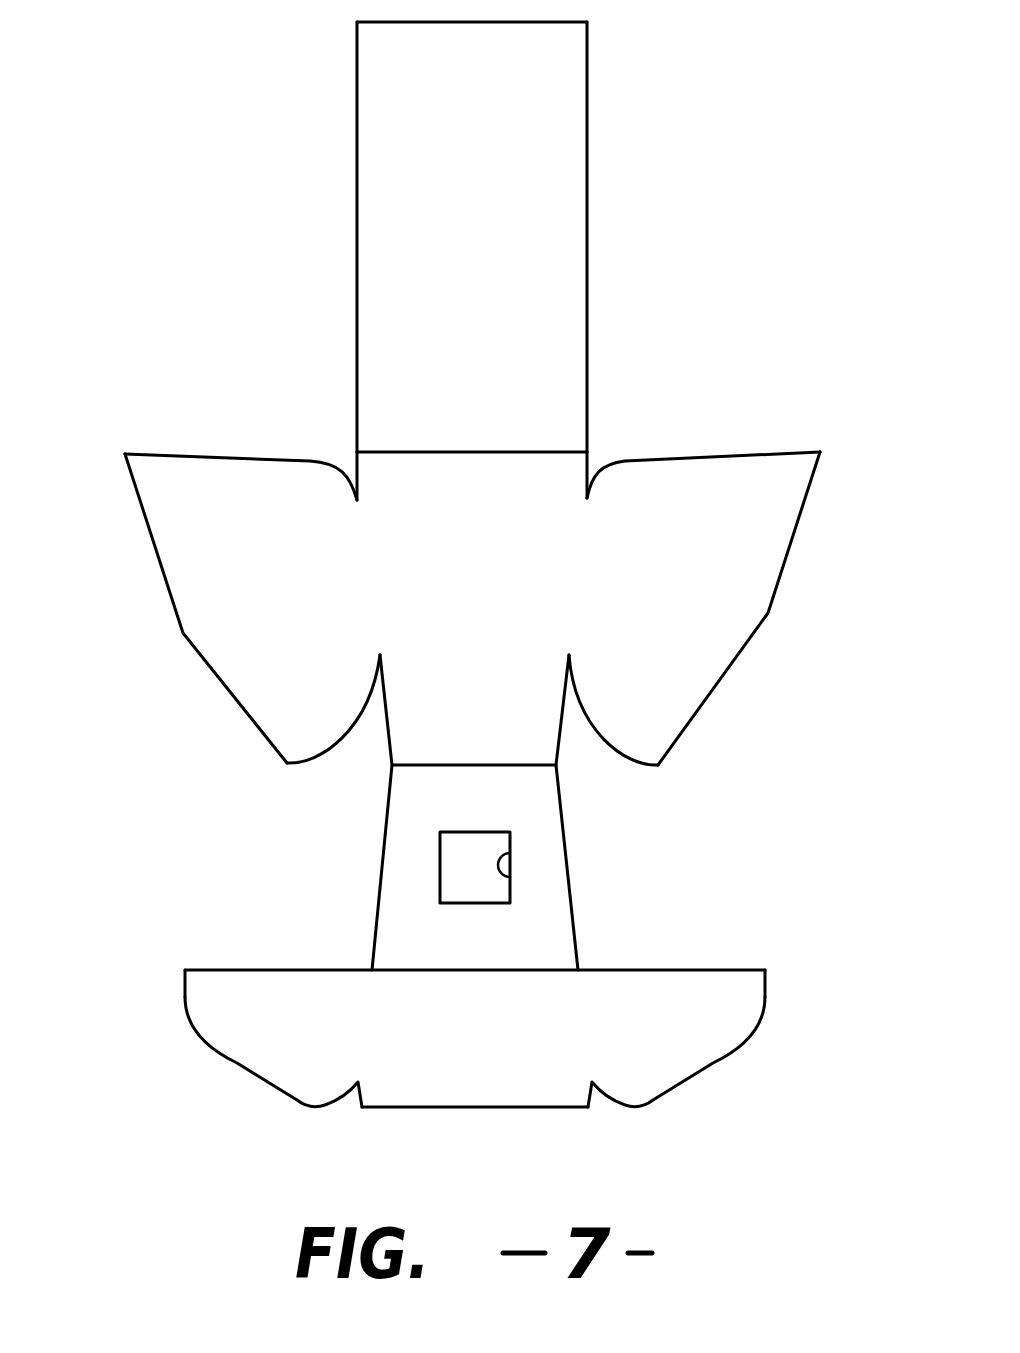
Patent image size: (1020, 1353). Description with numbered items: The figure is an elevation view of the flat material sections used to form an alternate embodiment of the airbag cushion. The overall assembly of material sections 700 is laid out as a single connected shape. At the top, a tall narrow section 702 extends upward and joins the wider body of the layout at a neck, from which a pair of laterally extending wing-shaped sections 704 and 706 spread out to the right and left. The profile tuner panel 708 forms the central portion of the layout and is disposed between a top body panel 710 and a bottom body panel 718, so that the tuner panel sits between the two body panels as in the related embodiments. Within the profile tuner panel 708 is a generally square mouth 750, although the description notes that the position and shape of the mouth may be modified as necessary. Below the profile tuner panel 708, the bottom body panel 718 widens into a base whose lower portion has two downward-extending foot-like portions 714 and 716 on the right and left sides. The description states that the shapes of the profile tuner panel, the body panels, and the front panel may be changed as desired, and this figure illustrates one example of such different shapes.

The stem 700 is at (544, 163).
The neck 702 is at (523, 478).
The right wing 704 is at (760, 477).
The left wing 706 is at (190, 478).
The profile tuner panel 708 is at (552, 932).
The top body panel 710 is at (288, 765).
The right foot 714 is at (678, 1062).
The left foot 716 is at (270, 1062).
The bottom body panel 718 is at (250, 968).
The mouth 750 is at (510, 843).